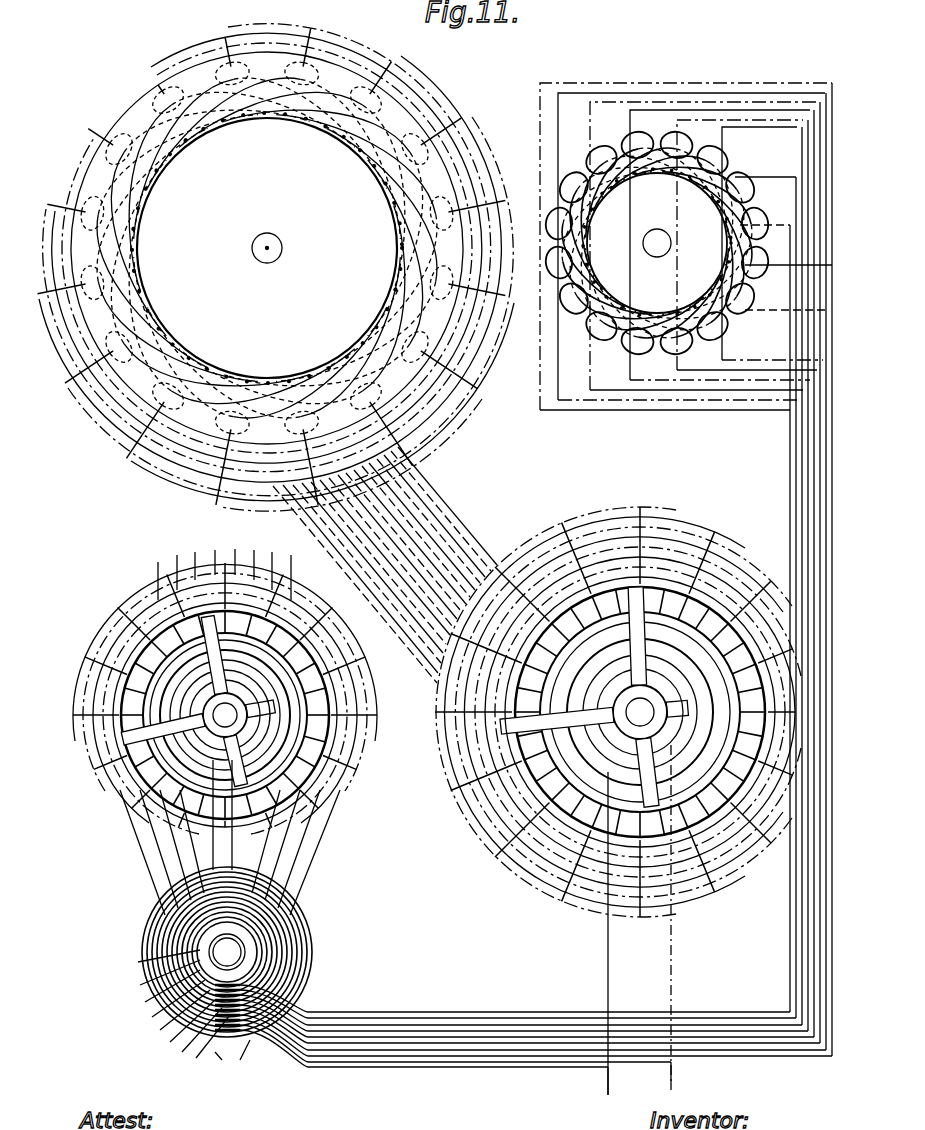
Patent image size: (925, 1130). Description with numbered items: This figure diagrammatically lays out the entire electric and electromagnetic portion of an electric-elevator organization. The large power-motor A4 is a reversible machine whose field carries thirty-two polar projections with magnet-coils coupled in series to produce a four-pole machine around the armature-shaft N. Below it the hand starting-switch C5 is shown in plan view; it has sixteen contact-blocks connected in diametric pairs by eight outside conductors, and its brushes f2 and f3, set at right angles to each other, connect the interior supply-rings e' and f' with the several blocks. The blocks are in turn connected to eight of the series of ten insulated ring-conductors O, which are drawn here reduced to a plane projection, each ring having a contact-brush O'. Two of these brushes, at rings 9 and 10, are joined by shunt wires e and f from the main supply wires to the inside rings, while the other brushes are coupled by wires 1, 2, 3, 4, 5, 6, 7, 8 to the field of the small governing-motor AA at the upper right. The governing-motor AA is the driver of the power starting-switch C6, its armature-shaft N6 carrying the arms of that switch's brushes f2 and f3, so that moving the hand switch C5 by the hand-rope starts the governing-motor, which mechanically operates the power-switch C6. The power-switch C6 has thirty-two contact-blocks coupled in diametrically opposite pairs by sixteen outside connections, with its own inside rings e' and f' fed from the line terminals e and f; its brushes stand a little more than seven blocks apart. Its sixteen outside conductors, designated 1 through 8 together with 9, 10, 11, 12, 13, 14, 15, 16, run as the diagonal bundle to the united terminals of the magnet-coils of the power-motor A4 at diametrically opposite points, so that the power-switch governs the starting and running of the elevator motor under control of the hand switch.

The power-motor A4 is at (273, 260).
The governing-motor AA is at (678, 248).
The armature-shaft N is at (270, 243).
The armature-shaft of governing-motor N6 is at (657, 243).
The hand starting-switch C5 is at (225, 727).
The power starting-switch C6 is at (618, 784).
The ring-conductors O is at (229, 981).
The contact-brushes of ring-conductors O' is at (235, 1056).
The supply or line wire e is at (678, 1075).
The supply or line wire f is at (614, 1082).
The interior supply-ring e' is at (679, 910).
The interior supply-ring f' is at (595, 933).
The brush f2 is at (634, 636).
The brush f3 is at (557, 720).
The outside conductor 1 is at (447, 506).
The outside conductor 2 is at (441, 511).
The outside conductor 3 is at (434, 516).
The outside conductor 4 is at (428, 521).
The outside conductor 5 is at (422, 526).
The outside conductor 6 is at (416, 531).
The outside conductor 7 is at (410, 537).
The outside conductor 8 is at (403, 542).
The ring-conductor 9 is at (397, 547).
The ring-conductor 10 is at (391, 552).
The outside conductor 11 is at (385, 557).
The outside conductor 12 is at (378, 563).
The outside conductor 13 is at (372, 568).
The outside conductor 14 is at (367, 574).
The outside conductor 15 is at (360, 579).
The outside conductor 16 is at (355, 584).